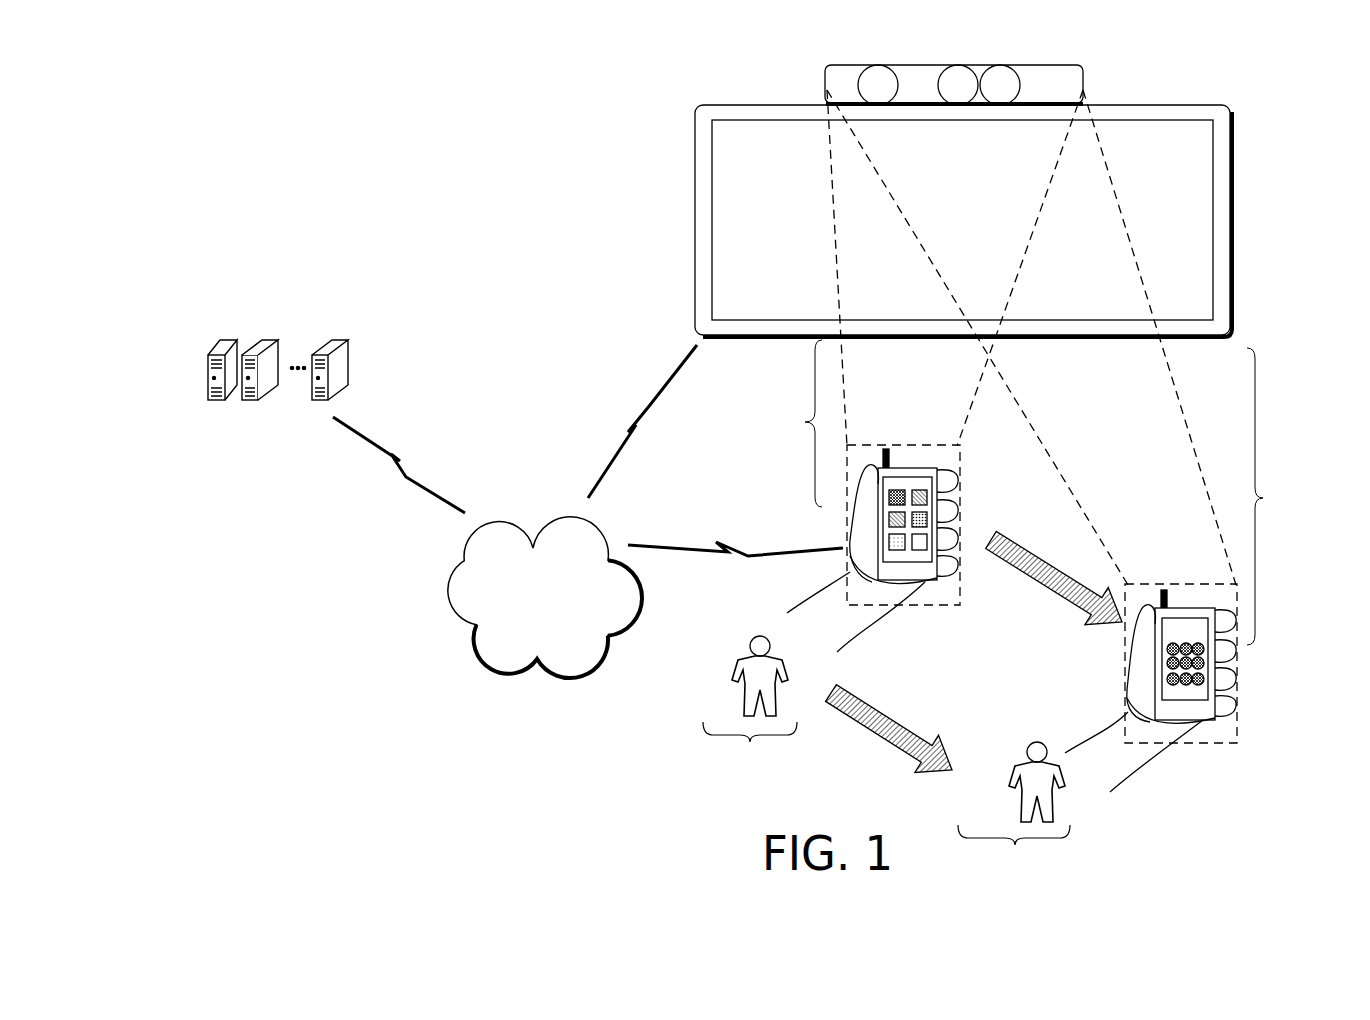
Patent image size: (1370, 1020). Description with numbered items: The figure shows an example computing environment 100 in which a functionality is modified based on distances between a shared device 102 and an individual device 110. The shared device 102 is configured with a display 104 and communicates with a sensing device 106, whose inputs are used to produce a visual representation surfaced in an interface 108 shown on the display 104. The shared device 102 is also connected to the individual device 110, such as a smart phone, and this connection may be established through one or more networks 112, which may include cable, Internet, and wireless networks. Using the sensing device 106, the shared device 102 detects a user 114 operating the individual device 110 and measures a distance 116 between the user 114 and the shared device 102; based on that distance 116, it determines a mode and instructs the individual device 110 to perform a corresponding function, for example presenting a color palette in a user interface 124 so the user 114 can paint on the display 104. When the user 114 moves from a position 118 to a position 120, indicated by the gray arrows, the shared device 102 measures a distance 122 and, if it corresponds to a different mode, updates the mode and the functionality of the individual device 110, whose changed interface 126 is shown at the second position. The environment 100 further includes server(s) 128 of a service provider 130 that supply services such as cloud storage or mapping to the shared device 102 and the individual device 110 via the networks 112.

The computing environment 100 is at (252, 88).
The shared device 102 is at (963, 238).
The display 104 is at (697, 266).
The sensing device 106 is at (1087, 80).
The interface 108 is at (738, 136).
The individual device 110 is at (1037, 621).
The networks 112 is at (605, 602).
The user 114 is at (878, 729).
The distance 116 is at (768, 423).
The position 118 is at (748, 744).
The position 120 is at (1017, 844).
The distance 122 is at (1295, 496).
The user interface 124 is at (880, 560).
The interface 126 is at (1150, 675).
The server(s) 128 is at (272, 398).
The service provider 130 is at (294, 350).